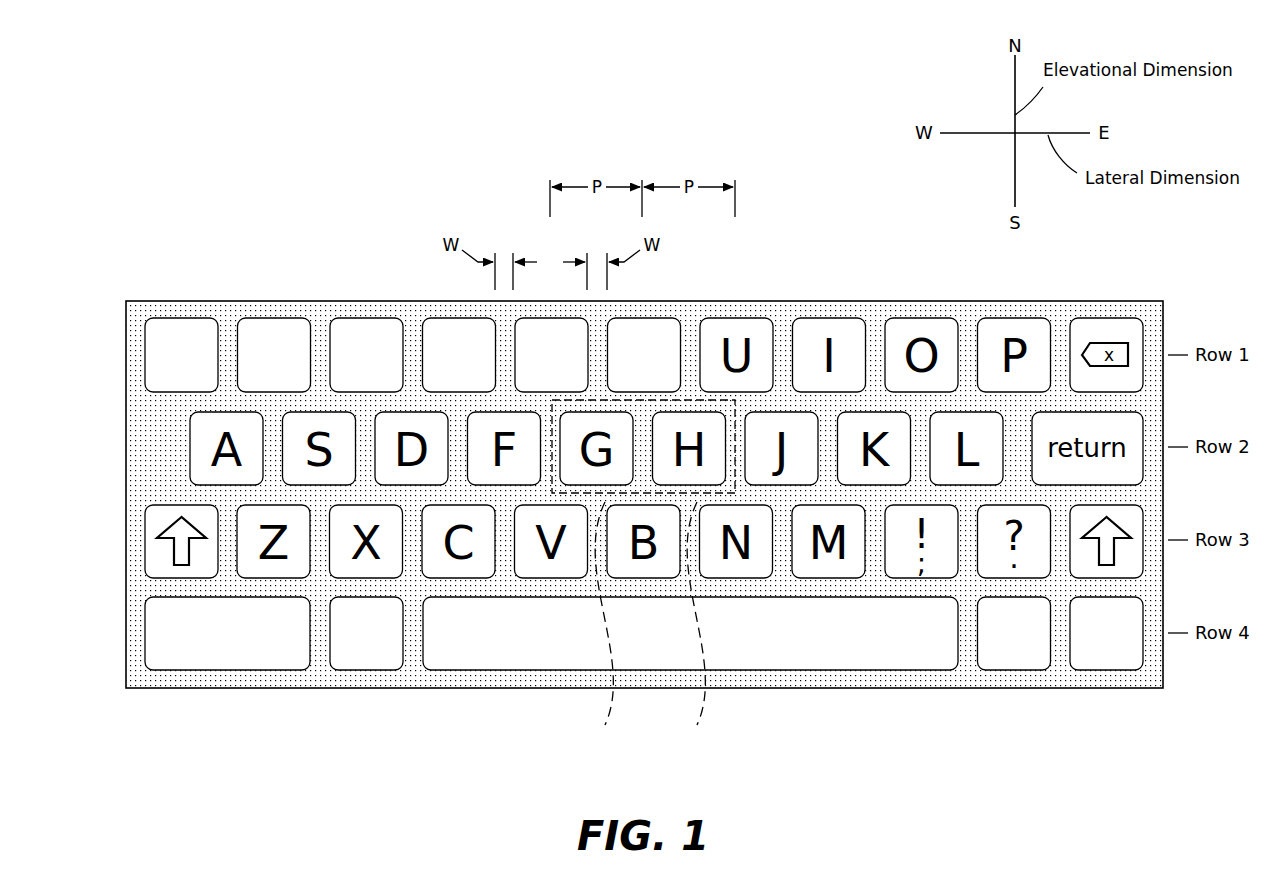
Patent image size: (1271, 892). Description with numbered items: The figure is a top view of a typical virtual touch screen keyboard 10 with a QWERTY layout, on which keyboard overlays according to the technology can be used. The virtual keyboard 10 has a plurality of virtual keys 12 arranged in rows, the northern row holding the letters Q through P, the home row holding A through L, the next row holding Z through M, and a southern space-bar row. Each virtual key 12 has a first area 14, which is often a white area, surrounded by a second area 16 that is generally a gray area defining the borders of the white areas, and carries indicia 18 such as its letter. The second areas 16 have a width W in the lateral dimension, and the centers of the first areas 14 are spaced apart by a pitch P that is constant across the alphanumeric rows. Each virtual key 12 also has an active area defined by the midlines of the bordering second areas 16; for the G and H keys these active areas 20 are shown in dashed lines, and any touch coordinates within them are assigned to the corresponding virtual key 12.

The virtual touch screen keyboard 10 is at (802, 84).
The virtual key 12 is at (347, 328).
The first area 14 is at (428, 326).
The second area 16 is at (567, 319).
The indicia 18 is at (660, 352).
The active area 20 is at (643, 576).